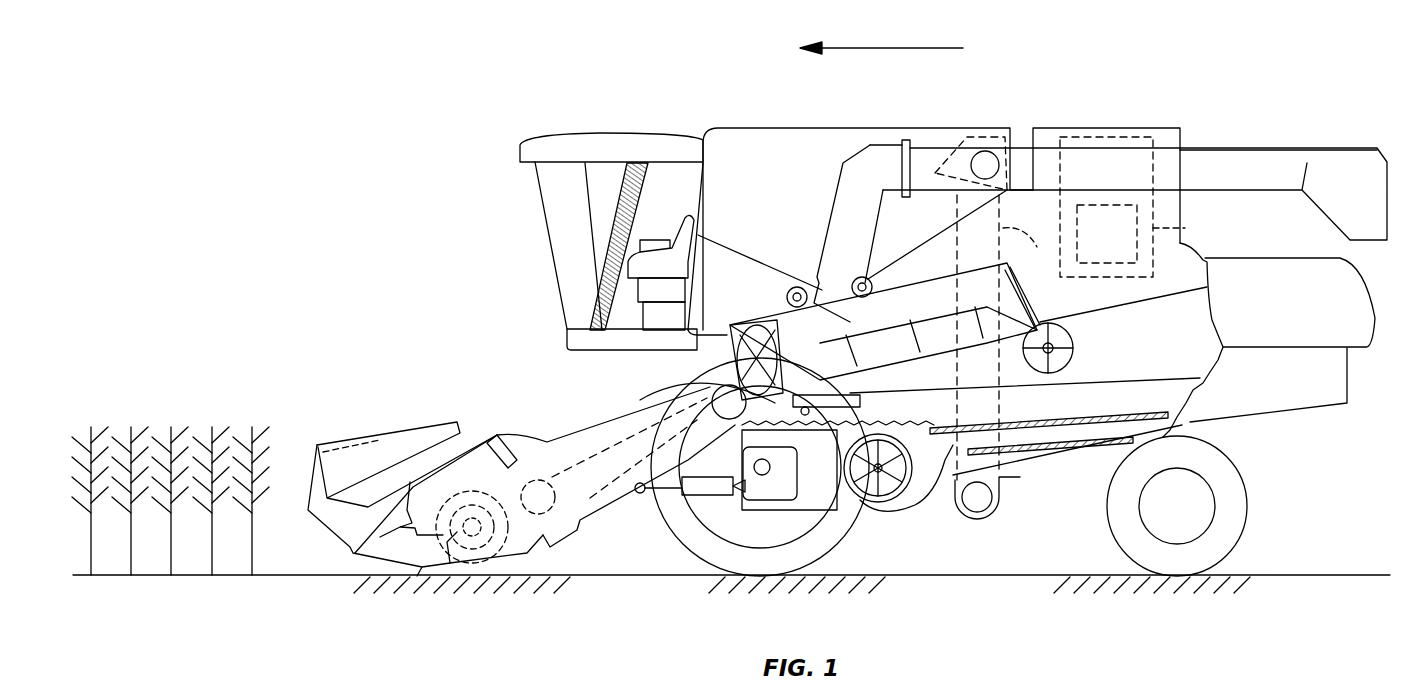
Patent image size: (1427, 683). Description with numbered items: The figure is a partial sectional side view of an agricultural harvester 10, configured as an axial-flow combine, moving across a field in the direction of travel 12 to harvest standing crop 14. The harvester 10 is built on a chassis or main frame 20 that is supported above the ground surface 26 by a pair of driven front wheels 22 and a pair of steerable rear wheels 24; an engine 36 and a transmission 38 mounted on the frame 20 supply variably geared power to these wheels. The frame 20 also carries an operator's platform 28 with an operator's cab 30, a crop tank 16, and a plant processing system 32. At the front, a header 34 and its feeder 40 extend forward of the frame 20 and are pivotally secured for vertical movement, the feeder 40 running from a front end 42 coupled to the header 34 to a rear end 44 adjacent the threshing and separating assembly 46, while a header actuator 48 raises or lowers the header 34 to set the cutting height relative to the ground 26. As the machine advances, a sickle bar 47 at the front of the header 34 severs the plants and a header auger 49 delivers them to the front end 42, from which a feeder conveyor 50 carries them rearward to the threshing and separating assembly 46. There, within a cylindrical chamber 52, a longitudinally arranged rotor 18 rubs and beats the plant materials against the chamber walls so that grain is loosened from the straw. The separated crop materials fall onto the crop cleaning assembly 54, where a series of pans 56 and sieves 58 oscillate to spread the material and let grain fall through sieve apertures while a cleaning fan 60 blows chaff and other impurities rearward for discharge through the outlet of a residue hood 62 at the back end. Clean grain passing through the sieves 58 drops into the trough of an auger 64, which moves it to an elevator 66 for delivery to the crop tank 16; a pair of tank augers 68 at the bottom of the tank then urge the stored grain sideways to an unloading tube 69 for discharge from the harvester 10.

The agricultural harvester 10 is at (577, 102).
The direction of travel 12 is at (897, 47).
The standing crop 14 is at (152, 384).
The crop tank 16 is at (785, 128).
The rotor 18 is at (760, 345).
The frame 20 is at (1190, 428).
The front wheels 22 is at (708, 552).
The rear wheels 24 is at (1243, 522).
The ground surface 26 is at (1334, 575).
The operator's platform 28 is at (569, 340).
The operator's cab 30 is at (556, 240).
The plant processing system 32 is at (1108, 350).
The header 34 is at (362, 432).
The engine 36 is at (1108, 130).
The transmission 38 is at (1180, 232).
The feeder 40 is at (552, 418).
The front end 42 is at (497, 483).
The rear end 44 is at (707, 370).
The threshing and separating assembly 46 is at (885, 321).
The sickle bar 47 is at (363, 563).
The header actuator 48 is at (690, 510).
The header auger 49 is at (472, 575).
The feeder conveyor 50 is at (595, 515).
The cylindrical chamber 52 is at (917, 292).
The crop cleaning assembly 54 is at (942, 508).
The pans 56 is at (890, 425).
The sieves 58 is at (1040, 425).
The cleaning fan 60 is at (872, 505).
The residue hood 62 is at (1350, 322).
The auger 64 is at (997, 508).
The elevator 66 is at (993, 206).
The tank augers 68 is at (797, 286).
The unloading tube 69 is at (1233, 160).